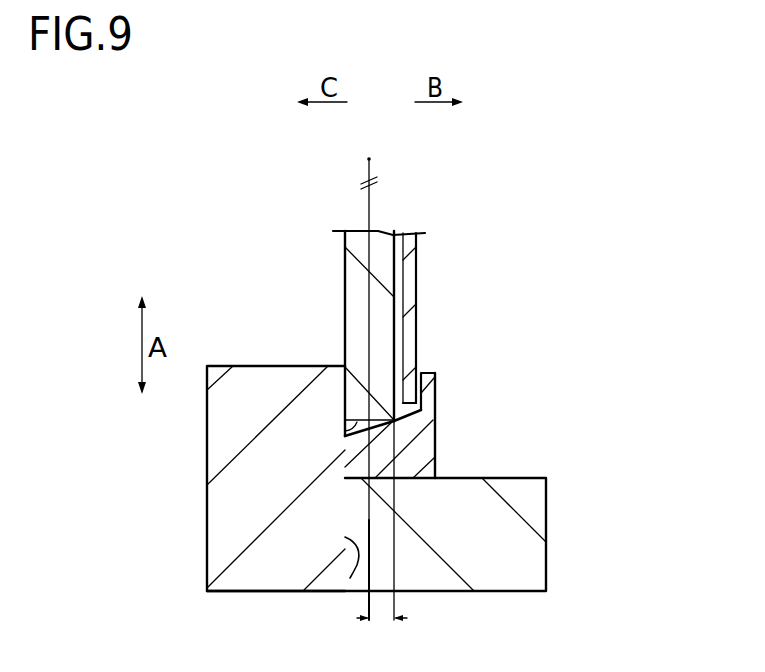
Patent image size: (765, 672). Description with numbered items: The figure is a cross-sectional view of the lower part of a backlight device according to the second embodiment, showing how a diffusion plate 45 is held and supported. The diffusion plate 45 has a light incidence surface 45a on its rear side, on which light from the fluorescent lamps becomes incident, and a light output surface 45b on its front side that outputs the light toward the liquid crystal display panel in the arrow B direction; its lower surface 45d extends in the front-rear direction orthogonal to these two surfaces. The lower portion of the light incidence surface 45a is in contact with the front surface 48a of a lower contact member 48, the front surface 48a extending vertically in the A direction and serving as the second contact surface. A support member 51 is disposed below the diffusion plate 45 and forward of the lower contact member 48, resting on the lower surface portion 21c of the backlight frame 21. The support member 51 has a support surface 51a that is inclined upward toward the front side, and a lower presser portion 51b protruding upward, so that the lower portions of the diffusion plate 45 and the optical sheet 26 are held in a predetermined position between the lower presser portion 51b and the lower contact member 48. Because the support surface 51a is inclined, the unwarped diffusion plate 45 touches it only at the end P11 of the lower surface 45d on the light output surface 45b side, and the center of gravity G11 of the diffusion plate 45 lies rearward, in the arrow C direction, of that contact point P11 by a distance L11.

The diffusion plate 45 is at (366, 318).
The light incidence surface 45a is at (342, 312).
The light output surface 45b is at (395, 299).
The lower surface 45d is at (345, 431).
The optical sheet 26 is at (408, 240).
The lower contact member 48 is at (283, 502).
The front surface 48a is at (350, 578).
The backlight frame 21 is at (429, 534).
The lower surface portion 21c is at (546, 548).
The support member 51 is at (417, 426).
The support surface 51a is at (421, 410).
The lower presser portion 51b is at (436, 390).
The end of the lower surface P11 is at (394, 421).
The center of gravity G11 is at (369, 159).
The distance L11 is at (400, 522).